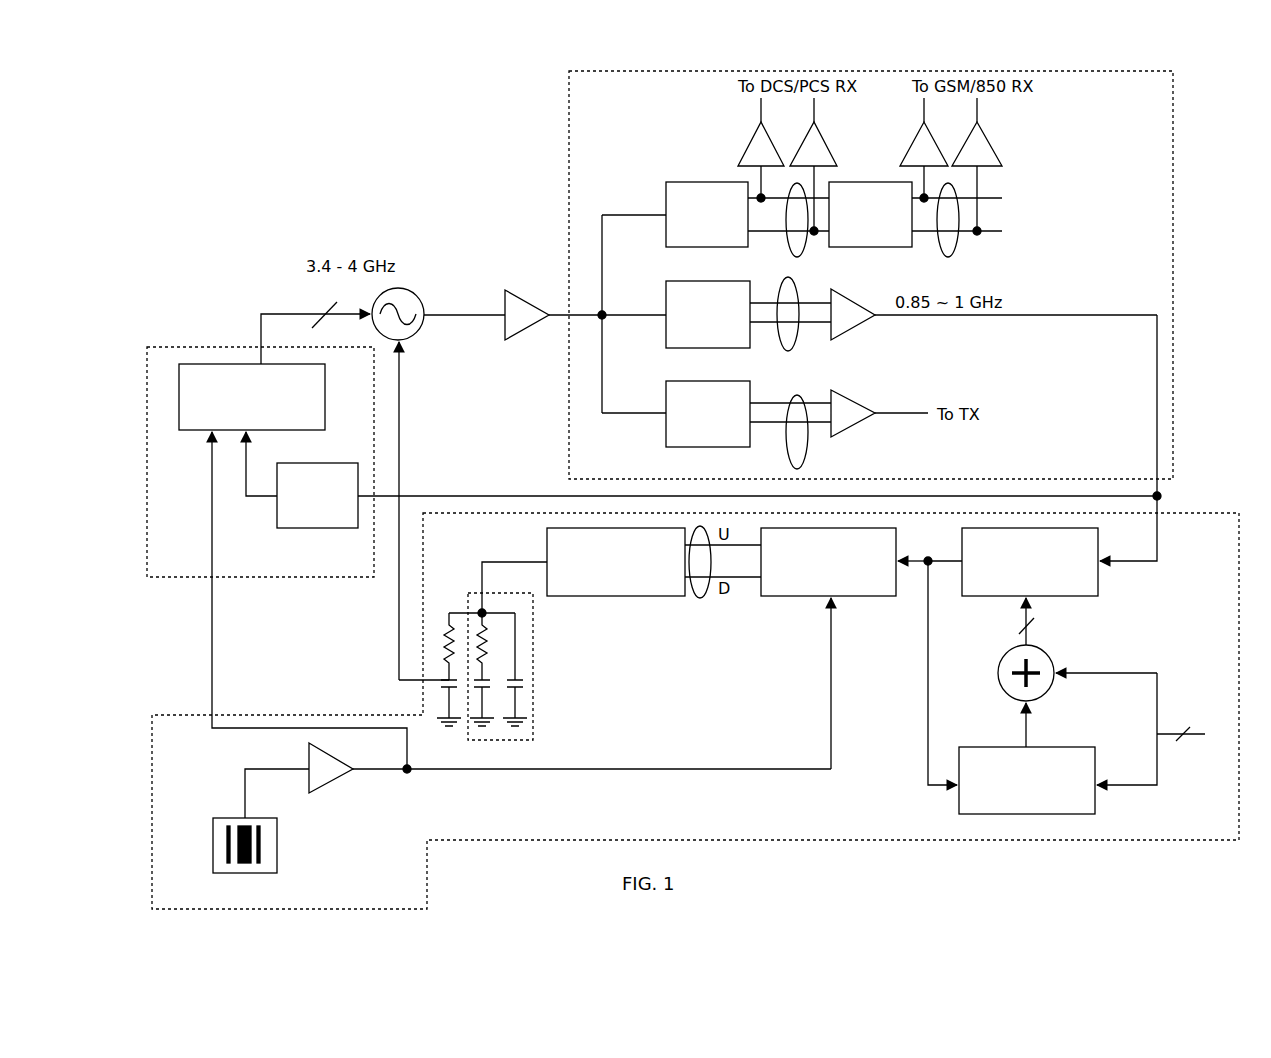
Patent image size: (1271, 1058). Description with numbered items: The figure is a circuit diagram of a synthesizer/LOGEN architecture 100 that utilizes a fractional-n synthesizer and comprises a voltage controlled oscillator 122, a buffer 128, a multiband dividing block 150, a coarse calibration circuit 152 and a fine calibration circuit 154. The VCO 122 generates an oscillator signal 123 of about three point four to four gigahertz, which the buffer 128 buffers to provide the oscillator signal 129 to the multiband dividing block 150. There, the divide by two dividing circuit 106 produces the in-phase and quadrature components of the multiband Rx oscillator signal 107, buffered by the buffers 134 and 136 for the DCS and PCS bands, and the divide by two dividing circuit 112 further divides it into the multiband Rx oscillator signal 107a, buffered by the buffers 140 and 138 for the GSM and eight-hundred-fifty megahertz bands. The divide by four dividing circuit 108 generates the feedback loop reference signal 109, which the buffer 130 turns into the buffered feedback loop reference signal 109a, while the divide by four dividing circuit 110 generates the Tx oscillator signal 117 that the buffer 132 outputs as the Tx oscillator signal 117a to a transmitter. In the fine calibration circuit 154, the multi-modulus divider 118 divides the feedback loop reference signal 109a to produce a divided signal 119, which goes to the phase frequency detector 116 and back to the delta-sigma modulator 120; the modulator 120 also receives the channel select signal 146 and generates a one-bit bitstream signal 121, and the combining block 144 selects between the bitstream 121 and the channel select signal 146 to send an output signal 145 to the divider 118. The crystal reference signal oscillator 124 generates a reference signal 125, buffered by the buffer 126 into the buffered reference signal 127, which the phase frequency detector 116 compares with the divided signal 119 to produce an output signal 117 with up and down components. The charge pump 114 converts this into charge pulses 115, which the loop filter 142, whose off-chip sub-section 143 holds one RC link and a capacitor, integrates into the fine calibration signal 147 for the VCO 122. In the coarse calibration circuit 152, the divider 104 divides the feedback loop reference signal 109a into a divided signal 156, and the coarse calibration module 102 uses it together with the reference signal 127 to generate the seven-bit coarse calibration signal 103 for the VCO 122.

The synthesizer/LOGEN architecture 100 is at (238, 177).
The coarse calibration module 102 is at (252, 397).
The coarse calibration signal 103 is at (264, 316).
The divider 104 is at (717, 495).
The divide by two dividing circuit 106 is at (707, 214).
The multiband Rx oscillator signal 107 is at (790, 254).
The multiband Rx oscillator signal 107a is at (940, 254).
The divide by four dividing circuit 108 is at (708, 314).
The feedback loop reference signal 109 is at (788, 351).
The feedback loop reference signal 109a is at (1068, 320).
The divide by four dividing circuit 110 is at (708, 414).
The divide by two dividing circuit 112 is at (870, 214).
The charge pump 114 is at (616, 562).
The charge pulses 115 is at (494, 570).
The phase frequency detector 116 is at (828, 562).
The output signal 117 is at (790, 458).
The Tx oscillator signal 117a is at (902, 426).
The multi-modulus divider 118 is at (1030, 562).
The divided signal 119 is at (928, 678).
The delta-sigma modulator 120 is at (1027, 780).
The 1-bit bitstream signal 121 is at (1026, 734).
The voltage controlled oscillator 122 is at (418, 312).
The oscillator signal 123 is at (462, 315).
The reference signal oscillator 124 is at (277, 862).
The reference signal 125 is at (245, 769).
The buffer 126 is at (330, 782).
The buffered reference signal 127 is at (380, 772).
The buffer 128 is at (520, 334).
The oscillator signal 129 is at (577, 315).
The buffer 130 is at (856, 330).
The buffer 132 is at (856, 430).
The buffer 134 is at (746, 145).
The buffer 136 is at (814, 122).
The buffer 138 is at (1028, 160).
The buffer 140 is at (932, 136).
The loop filter 142 is at (552, 650).
The sub-section of the loop filter 143 is at (533, 730).
The combining block 144 is at (1052, 660).
The output signal 145 is at (1024, 626).
The channel select signal 146 is at (1184, 793).
The fine calibration signal 147 is at (399, 420).
The multiband dividing block 150 is at (569, 128).
The coarse calibration circuit 152 is at (290, 577).
The fine calibration circuit 154 is at (1227, 514).
The divided signal 156 is at (246, 452).